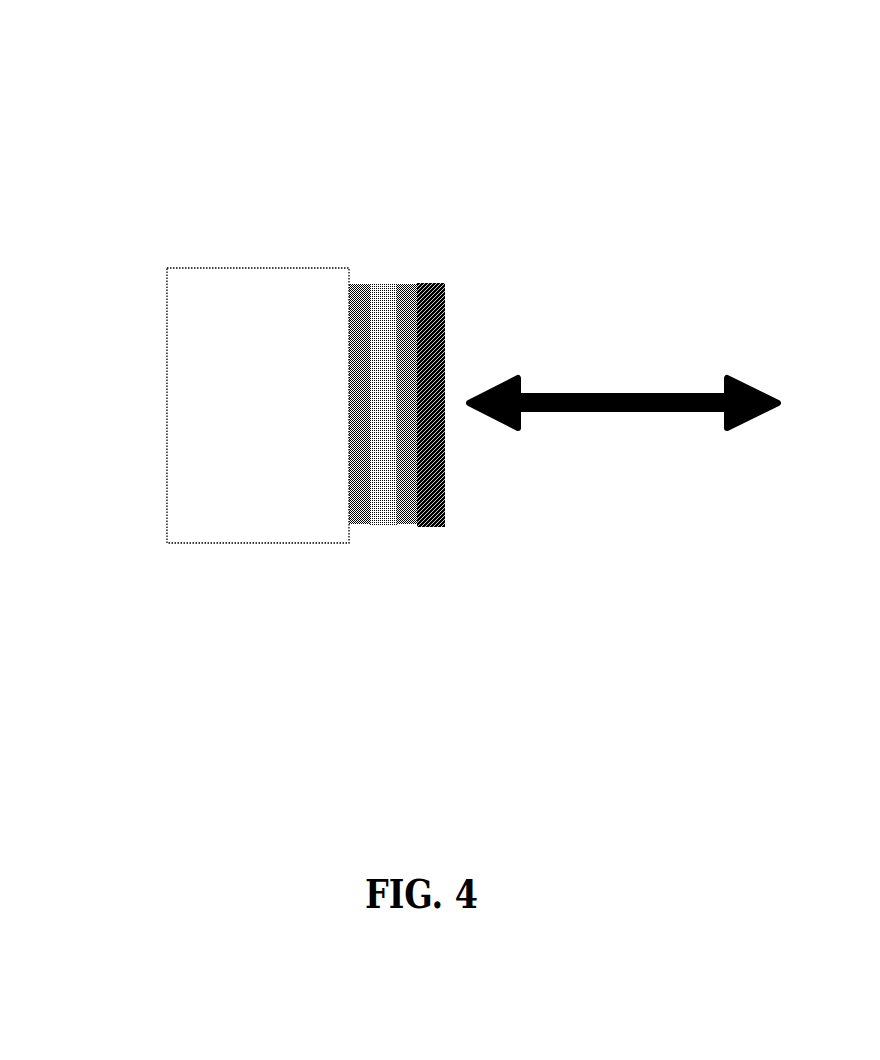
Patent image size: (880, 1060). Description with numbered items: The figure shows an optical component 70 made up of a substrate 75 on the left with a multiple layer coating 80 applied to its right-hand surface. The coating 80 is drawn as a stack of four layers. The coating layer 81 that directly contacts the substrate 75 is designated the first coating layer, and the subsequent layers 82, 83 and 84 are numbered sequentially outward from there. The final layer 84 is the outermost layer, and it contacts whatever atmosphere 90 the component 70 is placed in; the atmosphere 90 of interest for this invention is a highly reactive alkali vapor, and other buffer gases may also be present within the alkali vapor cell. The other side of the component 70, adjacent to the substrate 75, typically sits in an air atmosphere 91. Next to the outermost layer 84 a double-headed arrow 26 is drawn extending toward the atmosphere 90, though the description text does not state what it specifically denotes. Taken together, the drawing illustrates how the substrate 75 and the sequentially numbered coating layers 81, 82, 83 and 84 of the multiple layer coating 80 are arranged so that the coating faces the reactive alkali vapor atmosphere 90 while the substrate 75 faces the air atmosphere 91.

The optical component 70 is at (331, 392).
The substrate 75 is at (273, 558).
The multiple layer coating 80 is at (402, 464).
The first coating layer 81 is at (360, 533).
The second coating layer 82 is at (385, 277).
The third coating layer 83 is at (408, 532).
The final coating layer 84 is at (430, 277).
The direction of motion arrow 26 is at (588, 417).
The atmosphere 90 is at (633, 555).
The air atmosphere 91 is at (73, 492).